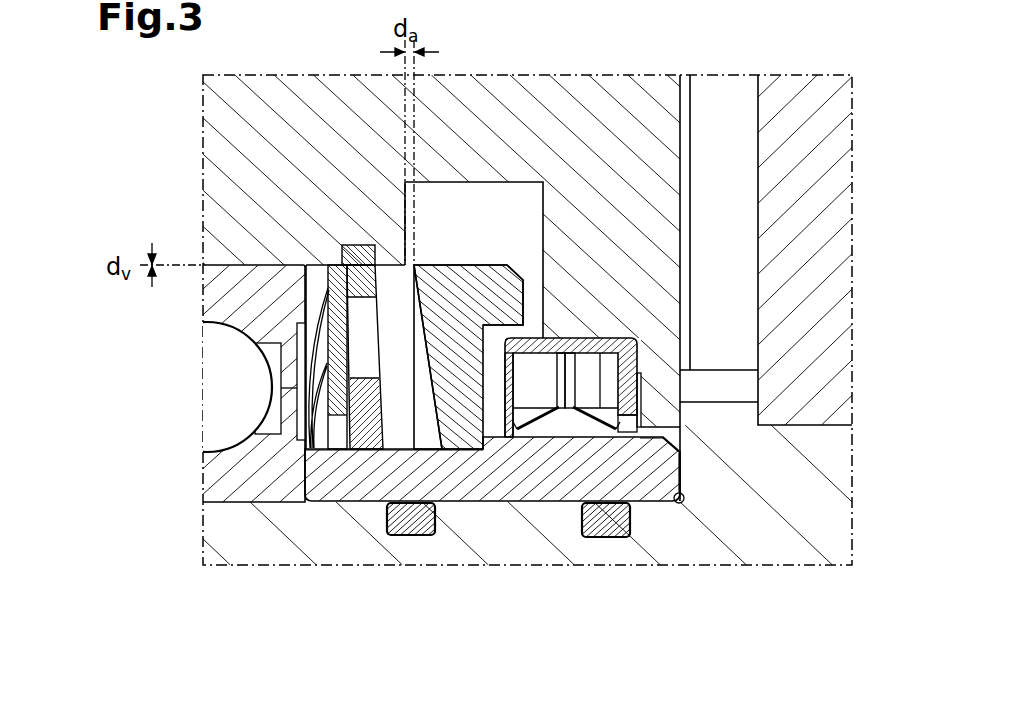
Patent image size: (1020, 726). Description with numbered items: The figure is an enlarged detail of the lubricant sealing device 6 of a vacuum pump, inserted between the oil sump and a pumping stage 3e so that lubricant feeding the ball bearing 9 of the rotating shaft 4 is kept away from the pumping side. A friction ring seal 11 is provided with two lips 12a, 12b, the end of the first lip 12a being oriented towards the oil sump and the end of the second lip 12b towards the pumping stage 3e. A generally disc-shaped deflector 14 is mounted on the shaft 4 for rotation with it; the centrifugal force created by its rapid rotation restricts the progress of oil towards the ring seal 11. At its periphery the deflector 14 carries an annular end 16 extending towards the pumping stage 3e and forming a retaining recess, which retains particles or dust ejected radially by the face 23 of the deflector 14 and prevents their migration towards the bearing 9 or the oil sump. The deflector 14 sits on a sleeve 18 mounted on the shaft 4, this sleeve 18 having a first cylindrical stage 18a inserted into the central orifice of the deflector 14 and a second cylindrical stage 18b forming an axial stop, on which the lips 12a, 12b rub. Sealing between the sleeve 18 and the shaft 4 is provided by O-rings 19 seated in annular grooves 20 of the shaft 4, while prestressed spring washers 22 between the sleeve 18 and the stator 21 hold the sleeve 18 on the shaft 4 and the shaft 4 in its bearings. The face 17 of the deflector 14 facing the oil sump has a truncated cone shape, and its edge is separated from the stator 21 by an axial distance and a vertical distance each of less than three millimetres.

The pumping stage 3e is at (708, 93).
The rotating shaft 4 is at (822, 532).
The lubricant sealing device 6 is at (485, 542).
The ball bearing 9 is at (225, 472).
The friction ring seal 11 is at (597, 330).
The first lip 12a is at (525, 431).
The second lip 12b is at (598, 432).
The deflector 14 is at (452, 276).
The annular end 16 is at (488, 277).
The face of the deflector 17 is at (427, 360).
The sleeve 18 is at (663, 475).
The first cylindrical stage 18a is at (400, 450).
The second cylindrical stage 18b is at (638, 450).
The O-ring 19 is at (387, 517).
The annular groove 20 is at (388, 530).
The stator 21 is at (600, 90).
The prestressed spring washer 22 is at (356, 260).
The face of the deflector 23 is at (507, 380).